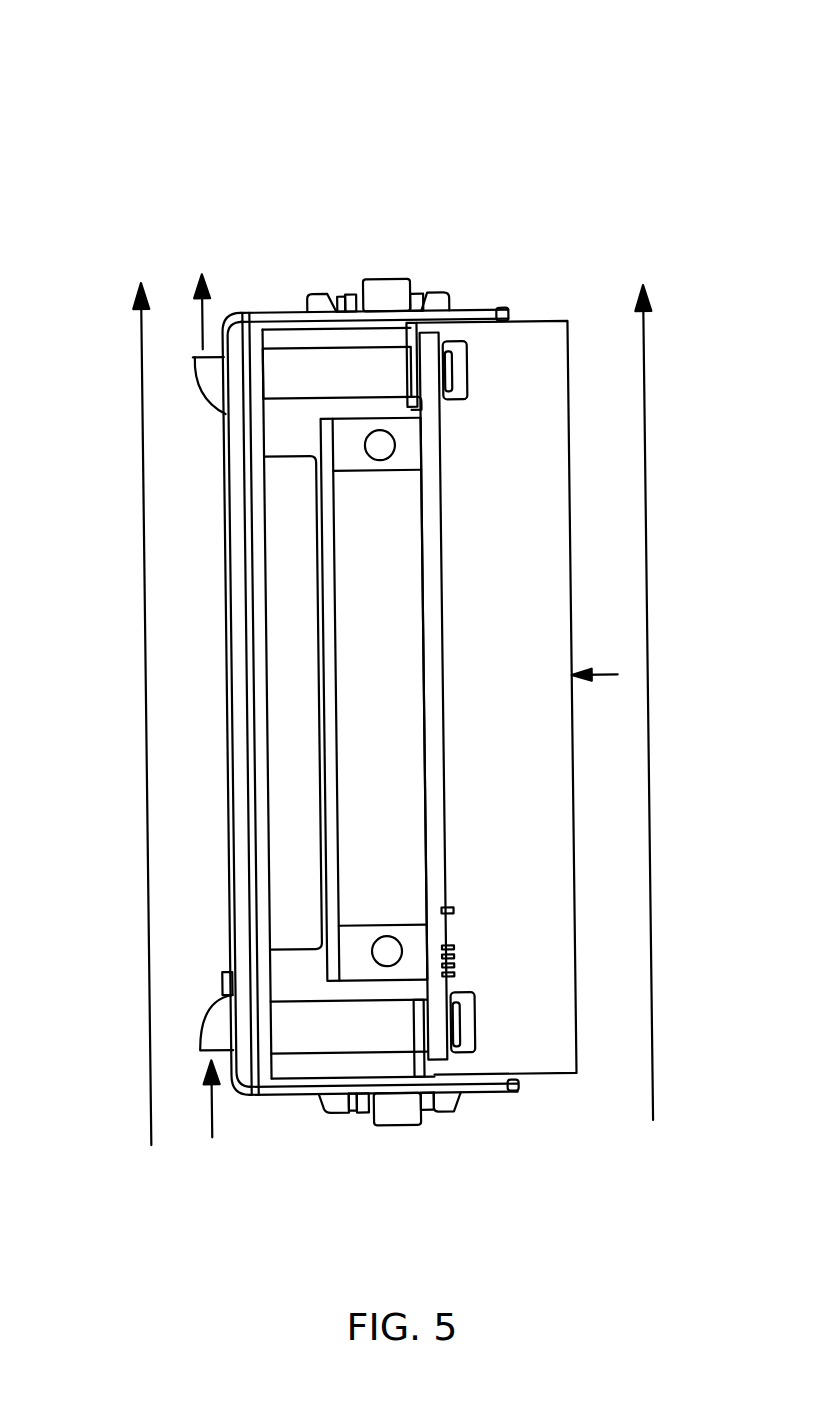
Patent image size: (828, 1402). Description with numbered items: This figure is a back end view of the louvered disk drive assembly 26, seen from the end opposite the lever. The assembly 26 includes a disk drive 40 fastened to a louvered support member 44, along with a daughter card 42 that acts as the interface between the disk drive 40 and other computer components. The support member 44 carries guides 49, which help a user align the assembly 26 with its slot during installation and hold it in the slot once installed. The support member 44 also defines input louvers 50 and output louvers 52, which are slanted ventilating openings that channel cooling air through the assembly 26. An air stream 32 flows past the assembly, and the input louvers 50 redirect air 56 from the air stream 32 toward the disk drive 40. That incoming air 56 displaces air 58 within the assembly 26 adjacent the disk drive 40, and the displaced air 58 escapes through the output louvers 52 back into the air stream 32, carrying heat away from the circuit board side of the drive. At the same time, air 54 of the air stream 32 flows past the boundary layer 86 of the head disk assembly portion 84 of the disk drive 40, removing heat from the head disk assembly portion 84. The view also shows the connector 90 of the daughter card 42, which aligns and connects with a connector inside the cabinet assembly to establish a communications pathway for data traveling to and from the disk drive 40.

The disk drive assembly 26 is at (529, 69).
The disk drive 40 is at (429, 646).
The louvered support member 44 is at (485, 303).
The guides 49 is at (320, 310).
The daughter card 42 is at (436, 566).
The head disk assembly portion 84 is at (571, 938).
The connector 90 is at (362, 672).
The output louvers 52 is at (213, 388).
The input louvers 50 is at (210, 1030).
The air 58 is at (208, 307).
The air 56 is at (207, 1120).
The air stream 32 is at (146, 600).
The air 54 is at (649, 556).
The boundary layer 86 is at (597, 660).